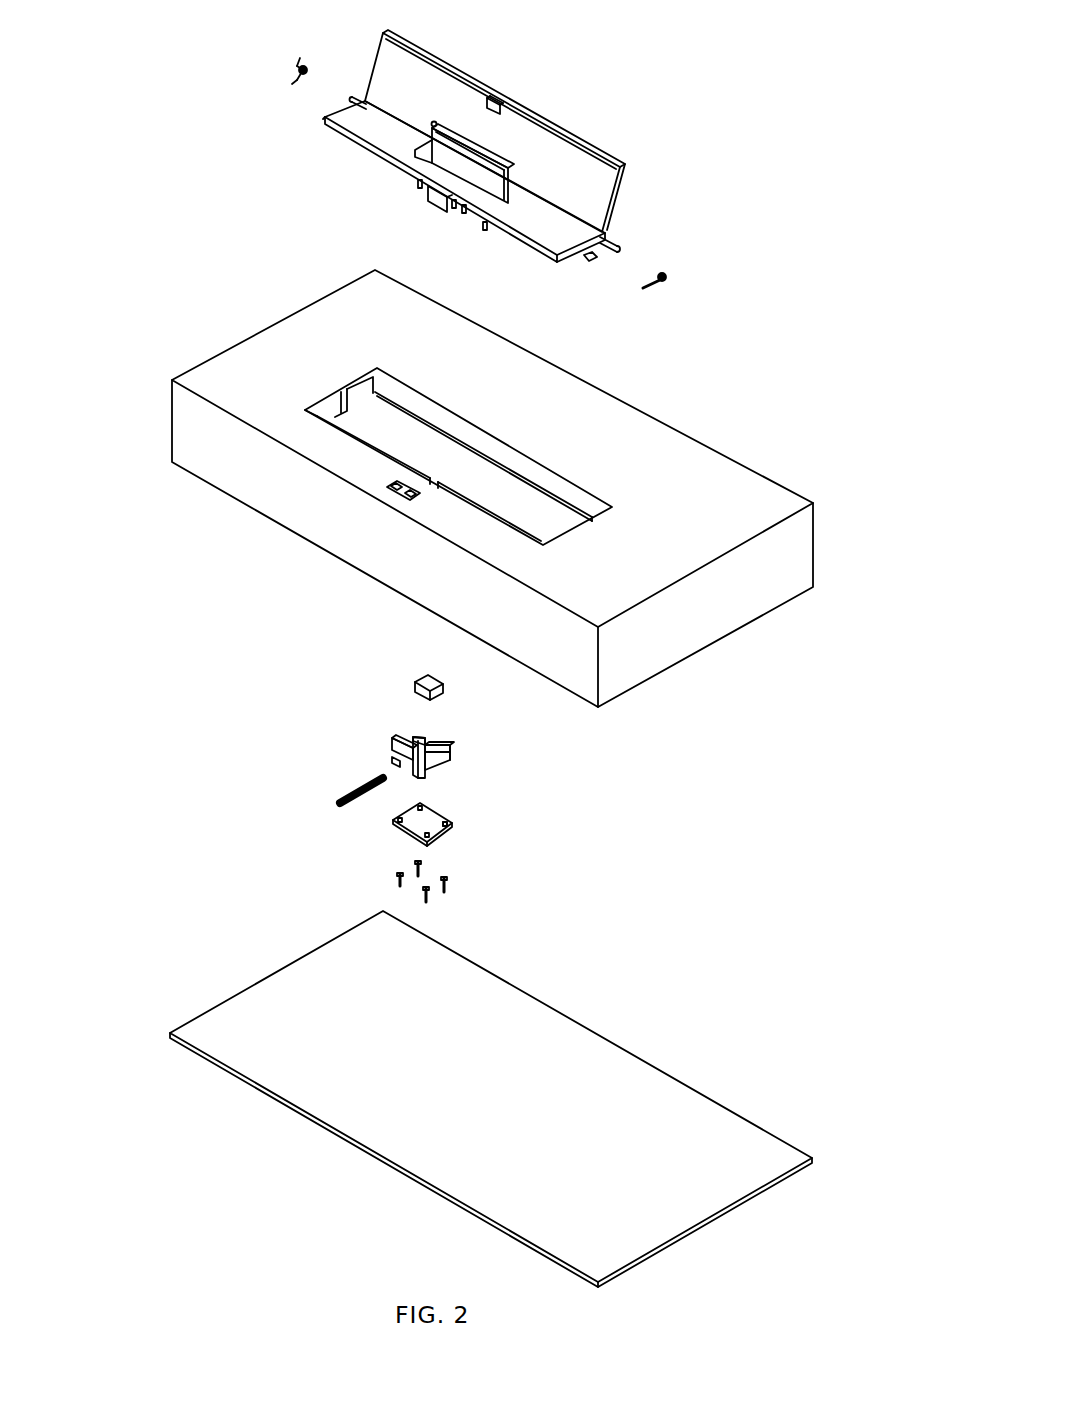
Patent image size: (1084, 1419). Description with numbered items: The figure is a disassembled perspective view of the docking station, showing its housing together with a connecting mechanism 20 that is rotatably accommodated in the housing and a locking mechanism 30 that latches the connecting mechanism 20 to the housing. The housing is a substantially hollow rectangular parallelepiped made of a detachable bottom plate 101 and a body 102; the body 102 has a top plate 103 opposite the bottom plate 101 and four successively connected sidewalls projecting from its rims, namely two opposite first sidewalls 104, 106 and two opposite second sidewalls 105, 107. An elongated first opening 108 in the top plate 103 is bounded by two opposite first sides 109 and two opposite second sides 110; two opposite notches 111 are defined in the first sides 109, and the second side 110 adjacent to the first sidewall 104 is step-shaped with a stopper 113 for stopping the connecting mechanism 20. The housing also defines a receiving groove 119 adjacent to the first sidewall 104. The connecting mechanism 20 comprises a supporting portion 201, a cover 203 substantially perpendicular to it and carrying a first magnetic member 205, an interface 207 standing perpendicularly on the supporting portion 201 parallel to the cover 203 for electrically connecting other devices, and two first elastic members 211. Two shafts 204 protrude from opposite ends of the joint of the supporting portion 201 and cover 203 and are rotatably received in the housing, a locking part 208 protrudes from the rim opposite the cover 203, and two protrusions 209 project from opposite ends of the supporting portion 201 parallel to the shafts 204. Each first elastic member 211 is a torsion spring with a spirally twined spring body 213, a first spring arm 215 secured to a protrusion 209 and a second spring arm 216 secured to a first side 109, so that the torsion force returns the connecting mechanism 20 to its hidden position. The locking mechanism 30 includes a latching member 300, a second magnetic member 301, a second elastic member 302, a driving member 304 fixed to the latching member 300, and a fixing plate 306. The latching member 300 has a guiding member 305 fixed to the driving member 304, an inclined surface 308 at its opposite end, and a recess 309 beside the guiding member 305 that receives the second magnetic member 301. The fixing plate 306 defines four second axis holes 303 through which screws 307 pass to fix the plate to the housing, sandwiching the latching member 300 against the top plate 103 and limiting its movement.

The connecting mechanism 20 is at (612, 108).
The locking mechanism 30 is at (268, 670).
The bottom plate 101 is at (572, 1057).
The body 102 is at (824, 541).
The top plate 103 is at (695, 470).
The first sidewall 104 is at (188, 432).
The second sidewall 105 is at (690, 640).
The first sidewall 106 is at (658, 410).
The second sidewall 107 is at (193, 365).
The first opening 108 is at (520, 500).
The first side 109 is at (333, 407).
The second side 110 is at (340, 425).
The notch 111 is at (360, 388).
The stopper 113 is at (507, 527).
The receiving groove 119 is at (405, 490).
The supporting portion 201 is at (538, 225).
The cover 203 is at (420, 70).
The shaft 204 is at (610, 248).
The first magnetic member 205 is at (500, 100).
The interface 207 is at (445, 158).
The locking part 208 is at (433, 205).
The protrusion 209 is at (590, 262).
The first elastic member 211 is at (665, 280).
The spring body 213 is at (298, 70).
The first spring arm 215 is at (294, 84).
The second spring arm 216 is at (300, 58).
The latching member 300 is at (440, 740).
The second magnetic member 301 is at (425, 680).
The second elastic member 302 is at (365, 780).
The second axis hole 303 is at (400, 820).
The driving member 304 is at (400, 740).
The guiding member 305 is at (420, 735).
The fixing plate 306 is at (440, 830).
The screws 307 is at (450, 885).
The inclined surface 308 is at (455, 750).
The recess 309 is at (445, 765).